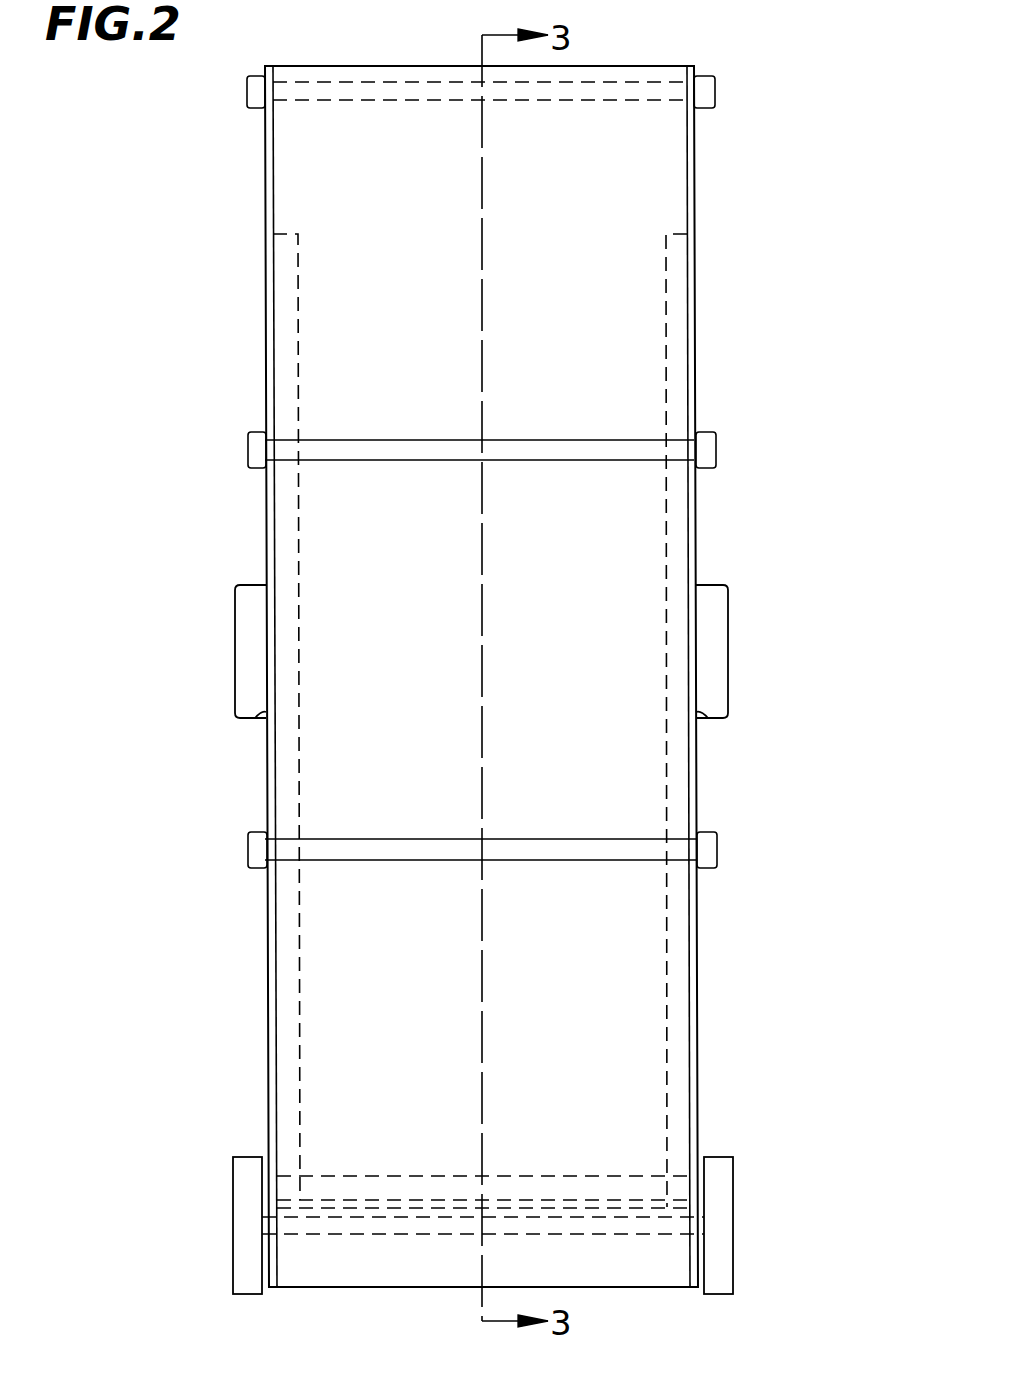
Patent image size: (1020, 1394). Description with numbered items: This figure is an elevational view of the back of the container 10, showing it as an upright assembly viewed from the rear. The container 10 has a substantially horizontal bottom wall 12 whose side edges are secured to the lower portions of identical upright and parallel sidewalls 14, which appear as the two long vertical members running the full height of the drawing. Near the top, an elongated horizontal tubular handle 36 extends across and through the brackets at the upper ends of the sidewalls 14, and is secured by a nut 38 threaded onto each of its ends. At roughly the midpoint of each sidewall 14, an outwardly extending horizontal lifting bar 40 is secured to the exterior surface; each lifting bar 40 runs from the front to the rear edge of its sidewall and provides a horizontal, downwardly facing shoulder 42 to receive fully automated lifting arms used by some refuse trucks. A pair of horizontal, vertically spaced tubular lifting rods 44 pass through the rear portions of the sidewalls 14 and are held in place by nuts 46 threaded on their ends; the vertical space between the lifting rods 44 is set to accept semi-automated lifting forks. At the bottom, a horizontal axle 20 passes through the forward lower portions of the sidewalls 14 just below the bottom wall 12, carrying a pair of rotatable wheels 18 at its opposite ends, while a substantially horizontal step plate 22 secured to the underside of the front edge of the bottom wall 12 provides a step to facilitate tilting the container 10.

The container 10 is at (665, 66).
The bottom wall 12 is at (357, 1176).
The sidewalls 14 is at (268, 1073).
The rotatable wheels 18 is at (245, 1157).
The horizontal axle 20 is at (265, 1224).
The step plate 22 is at (455, 1215).
The tubular handle 36 is at (452, 80).
The nut 38 is at (247, 92).
The lifting bars 40 is at (235, 630).
The shoulders 42 is at (255, 718).
The lifting rods 44 is at (357, 440).
The nuts 46 is at (248, 450).